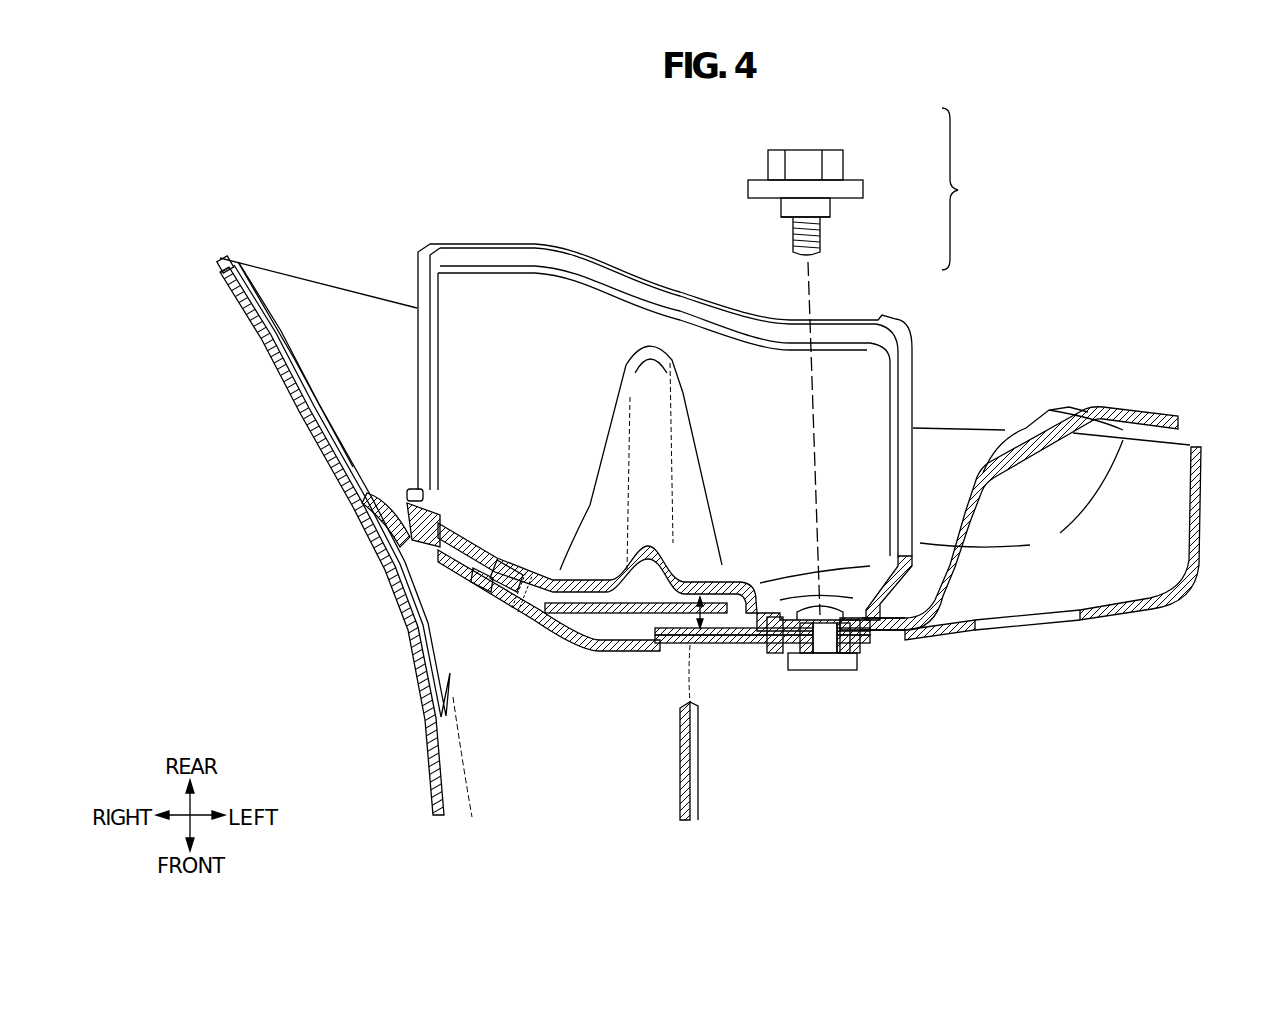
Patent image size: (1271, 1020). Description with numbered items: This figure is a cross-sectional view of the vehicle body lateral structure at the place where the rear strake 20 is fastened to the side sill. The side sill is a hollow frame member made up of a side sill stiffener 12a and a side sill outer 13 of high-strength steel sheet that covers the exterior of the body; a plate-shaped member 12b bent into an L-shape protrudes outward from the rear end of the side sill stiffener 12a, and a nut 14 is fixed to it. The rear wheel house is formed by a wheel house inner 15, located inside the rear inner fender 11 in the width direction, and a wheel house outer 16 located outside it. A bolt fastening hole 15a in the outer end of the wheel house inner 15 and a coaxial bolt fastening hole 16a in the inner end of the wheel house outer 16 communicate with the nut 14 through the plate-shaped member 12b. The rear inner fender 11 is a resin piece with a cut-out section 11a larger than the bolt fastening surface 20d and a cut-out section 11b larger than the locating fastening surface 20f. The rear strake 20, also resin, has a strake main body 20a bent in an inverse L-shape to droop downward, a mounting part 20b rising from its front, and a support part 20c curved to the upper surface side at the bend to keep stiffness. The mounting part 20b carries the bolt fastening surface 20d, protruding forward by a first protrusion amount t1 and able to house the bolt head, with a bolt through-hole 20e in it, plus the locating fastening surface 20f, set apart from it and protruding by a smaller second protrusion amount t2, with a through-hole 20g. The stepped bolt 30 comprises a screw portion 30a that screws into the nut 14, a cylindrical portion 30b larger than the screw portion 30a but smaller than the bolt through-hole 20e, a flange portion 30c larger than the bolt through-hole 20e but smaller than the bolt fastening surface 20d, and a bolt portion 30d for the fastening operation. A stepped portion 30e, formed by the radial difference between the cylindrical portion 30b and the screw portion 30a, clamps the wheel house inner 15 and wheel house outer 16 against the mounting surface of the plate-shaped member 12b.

The rear inner fender 11 is at (1055, 430).
The cut-out section 11a is at (907, 607).
The cut-out section 11b is at (410, 537).
The side sill stiffener 12a is at (690, 768).
The plate-shaped member 12b is at (863, 650).
The side sill outer 13 is at (527, 763).
The nut 14 is at (850, 688).
The wheel house inner 15 is at (312, 302).
The bolt fastening hole 15a is at (815, 648).
The wheel house outer 16 is at (1180, 435).
The bolt fastening hole 16a is at (823, 623).
The rear strake 20 is at (592, 226).
The strake main body 20a is at (523, 347).
The mounting part 20b is at (713, 570).
The support part 20c is at (655, 413).
The bolt fastening surface 20d is at (728, 640).
The bolt through-hole 20e is at (788, 653).
The locating fastening surface 20f is at (530, 593).
The through-hole 20g is at (478, 590).
The stepped bolt 30 is at (873, 191).
The screw portion 30a is at (820, 236).
The cylindrical portion 30b is at (828, 207).
The flange portion 30c is at (862, 188).
The bolt portion 30d is at (840, 164).
The stepped portion 30e is at (828, 218).
The first protrusion amount t1 is at (700, 628).
The second protrusion amount t2 is at (518, 605).